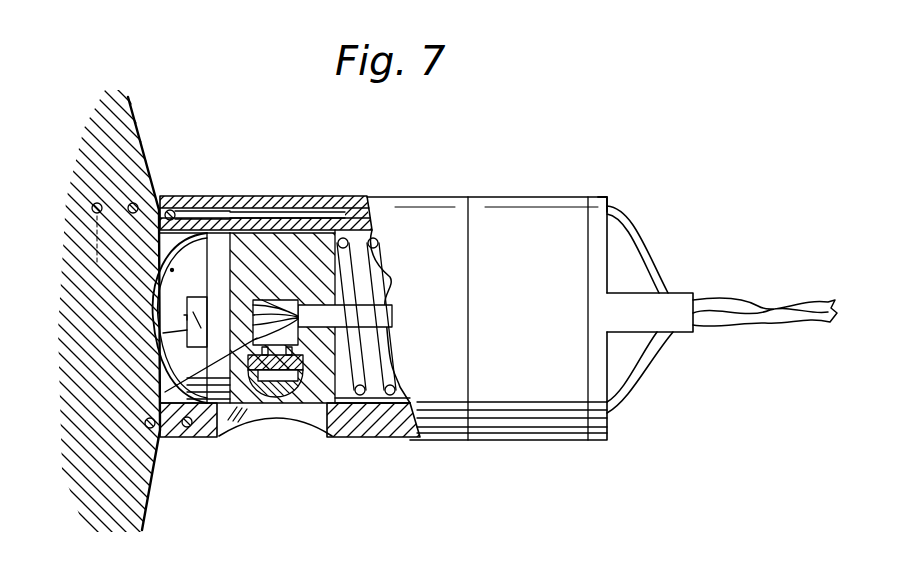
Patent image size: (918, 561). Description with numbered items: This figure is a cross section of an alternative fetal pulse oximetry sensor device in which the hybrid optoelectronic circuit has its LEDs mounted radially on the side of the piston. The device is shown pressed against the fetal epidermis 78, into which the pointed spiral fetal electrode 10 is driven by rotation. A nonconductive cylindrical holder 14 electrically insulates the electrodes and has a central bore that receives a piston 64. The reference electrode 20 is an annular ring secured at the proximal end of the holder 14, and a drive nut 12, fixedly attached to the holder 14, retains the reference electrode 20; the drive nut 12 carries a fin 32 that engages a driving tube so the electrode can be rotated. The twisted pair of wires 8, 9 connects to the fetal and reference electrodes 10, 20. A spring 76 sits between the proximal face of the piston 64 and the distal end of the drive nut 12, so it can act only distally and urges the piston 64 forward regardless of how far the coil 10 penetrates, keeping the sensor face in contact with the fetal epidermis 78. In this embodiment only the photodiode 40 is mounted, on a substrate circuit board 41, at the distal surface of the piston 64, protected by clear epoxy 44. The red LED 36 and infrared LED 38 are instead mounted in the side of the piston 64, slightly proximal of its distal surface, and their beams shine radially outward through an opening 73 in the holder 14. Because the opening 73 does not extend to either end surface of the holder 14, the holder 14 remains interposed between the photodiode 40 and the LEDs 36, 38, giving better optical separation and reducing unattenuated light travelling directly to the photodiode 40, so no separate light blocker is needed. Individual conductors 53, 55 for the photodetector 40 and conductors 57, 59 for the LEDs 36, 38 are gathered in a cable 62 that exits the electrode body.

The fetal epidermis 78 is at (62, 268).
The fetal electrode 10 is at (140, 202).
The piston 64 is at (325, 218).
The wire 9 is at (247, 218).
The nonconductive cylindrical holder 14 is at (437, 208).
The reference electrode 20 is at (556, 215).
The drive nut 12 is at (600, 207).
The fin 32 is at (670, 297).
The wire 8 is at (645, 349).
The conductor 55 is at (280, 300).
The conductor 53 is at (252, 317).
The cable 62 is at (377, 316).
The conductor 59 is at (310, 347).
The spring 76 is at (372, 262).
The infrared LED 38 is at (293, 395).
The photodiode 40 is at (187, 320).
The substrate circuit board 41 is at (212, 238).
The clear epoxy 44 is at (175, 330).
The conductor 57 is at (165, 392).
The opening 73 is at (225, 436).
The red LED 36 is at (263, 407).